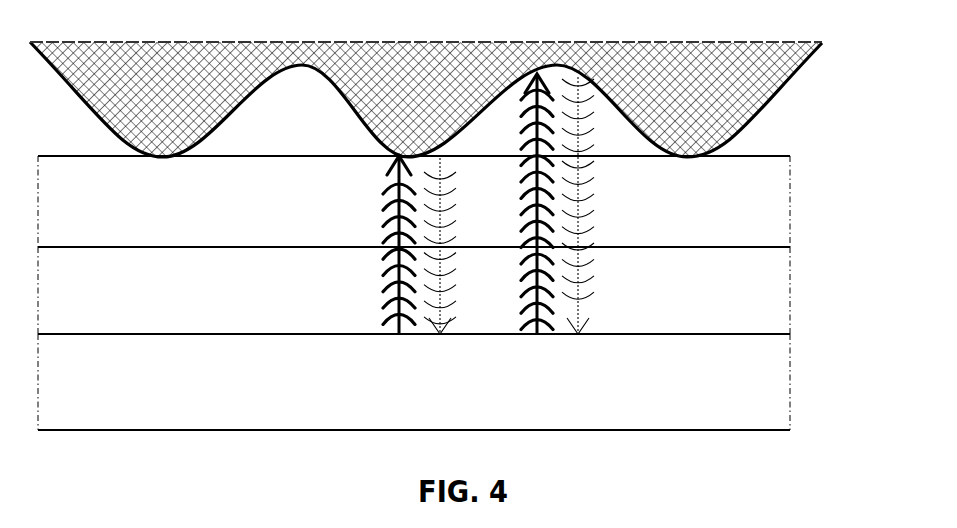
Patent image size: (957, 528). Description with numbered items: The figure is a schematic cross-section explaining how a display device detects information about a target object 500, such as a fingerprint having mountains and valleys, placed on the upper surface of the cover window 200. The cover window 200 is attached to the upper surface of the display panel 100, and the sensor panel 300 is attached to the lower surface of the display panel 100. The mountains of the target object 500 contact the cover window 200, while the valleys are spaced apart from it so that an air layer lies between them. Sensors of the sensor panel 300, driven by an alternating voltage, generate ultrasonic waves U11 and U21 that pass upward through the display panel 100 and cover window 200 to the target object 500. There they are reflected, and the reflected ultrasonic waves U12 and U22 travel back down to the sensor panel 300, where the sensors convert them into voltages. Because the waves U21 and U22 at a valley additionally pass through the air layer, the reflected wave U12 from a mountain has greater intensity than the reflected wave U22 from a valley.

The target object 500 is at (792, 88).
The cover window 200 is at (777, 200).
The display panel 100 is at (777, 298).
The sensor panel 300 is at (777, 390).
The ultrasonic wave U11 is at (397, 263).
The reflected ultrasonic wave U12 is at (442, 264).
The ultrasonic wave U21 is at (536, 222).
The reflected ultrasonic wave U22 is at (581, 223).